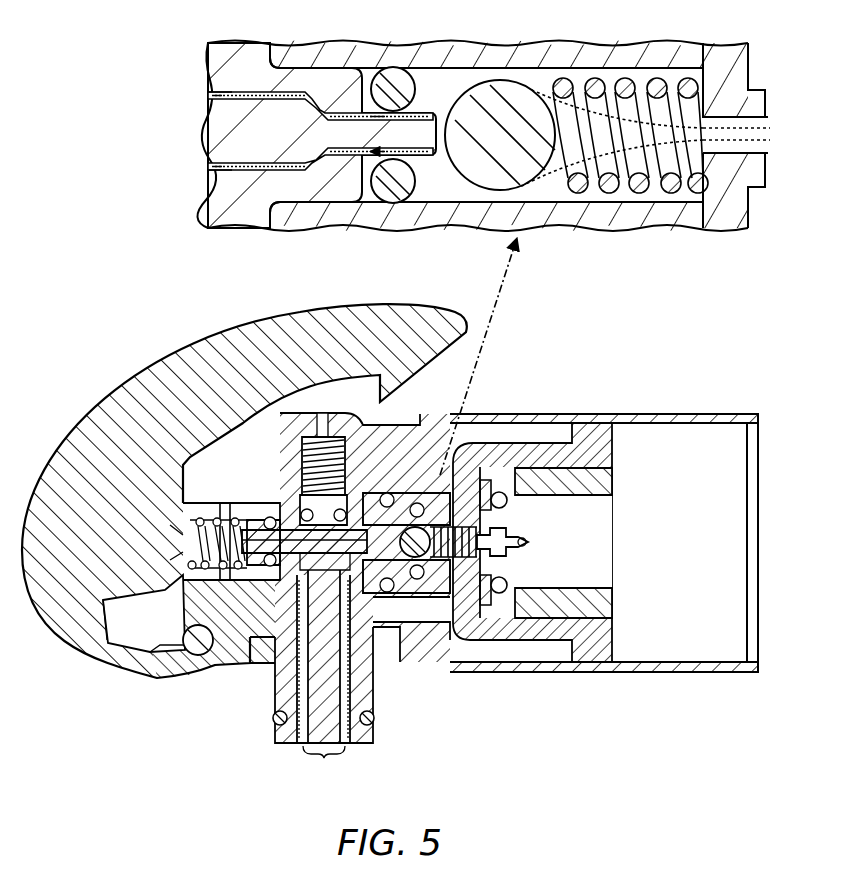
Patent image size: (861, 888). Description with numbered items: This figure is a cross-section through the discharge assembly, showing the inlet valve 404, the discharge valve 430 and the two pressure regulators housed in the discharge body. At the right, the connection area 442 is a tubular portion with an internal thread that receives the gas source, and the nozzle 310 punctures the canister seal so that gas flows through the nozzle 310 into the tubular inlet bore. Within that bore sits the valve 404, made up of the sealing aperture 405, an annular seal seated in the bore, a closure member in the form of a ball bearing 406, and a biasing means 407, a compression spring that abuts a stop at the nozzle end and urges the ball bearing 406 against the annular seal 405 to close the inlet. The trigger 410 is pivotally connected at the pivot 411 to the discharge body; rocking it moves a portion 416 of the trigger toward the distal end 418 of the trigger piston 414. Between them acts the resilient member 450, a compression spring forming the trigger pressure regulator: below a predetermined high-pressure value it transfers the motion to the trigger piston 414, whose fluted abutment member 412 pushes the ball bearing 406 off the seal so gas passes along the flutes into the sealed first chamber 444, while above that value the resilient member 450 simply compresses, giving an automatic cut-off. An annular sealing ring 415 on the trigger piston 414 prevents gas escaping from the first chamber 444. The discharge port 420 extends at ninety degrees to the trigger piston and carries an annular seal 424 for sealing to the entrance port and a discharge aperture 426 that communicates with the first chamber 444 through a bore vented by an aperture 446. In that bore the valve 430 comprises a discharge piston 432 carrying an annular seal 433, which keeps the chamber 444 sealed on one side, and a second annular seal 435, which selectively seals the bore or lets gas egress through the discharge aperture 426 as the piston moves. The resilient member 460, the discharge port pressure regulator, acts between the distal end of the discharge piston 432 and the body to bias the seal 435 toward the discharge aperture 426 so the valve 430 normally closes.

The valve 404 is at (200, 54).
The sealing aperture 405 is at (393, 196).
The closure member 406 is at (497, 100).
The biasing means 407 is at (622, 90).
The trigger 410 is at (92, 447).
The pivot 411 is at (198, 656).
The abutment member 412 is at (356, 132).
The trigger piston 414 is at (220, 130).
The annular sealing ring 415 is at (270, 516).
The portion of the trigger 416 is at (190, 546).
The distal end of the trigger piston 418 is at (213, 629).
The discharge port 420 is at (272, 718).
The annular seal 424 is at (376, 718).
The discharge aperture 426 is at (323, 764).
The valve 430 is at (332, 697).
The discharge piston 432 is at (300, 680).
The annular seal 433 is at (302, 516).
The second annular seal 435 is at (411, 617).
The connection area 442 is at (698, 675).
The first chamber 444 is at (285, 565).
The aperture 446 is at (323, 417).
The resilient member 450 is at (178, 600).
The resilient member 460 is at (300, 458).
The nozzle 310 is at (527, 547).